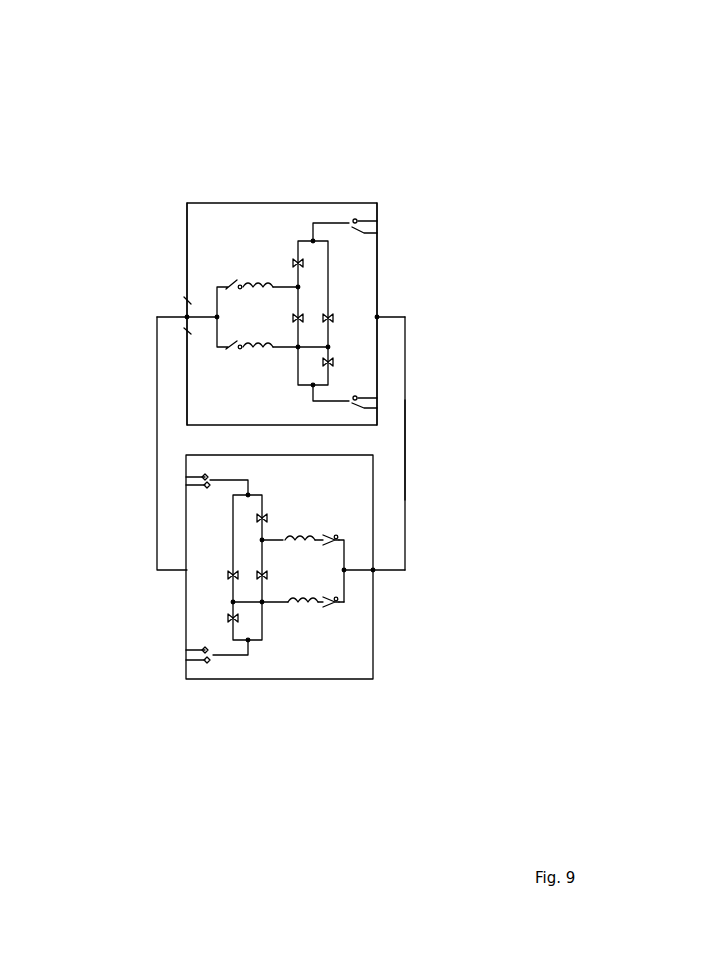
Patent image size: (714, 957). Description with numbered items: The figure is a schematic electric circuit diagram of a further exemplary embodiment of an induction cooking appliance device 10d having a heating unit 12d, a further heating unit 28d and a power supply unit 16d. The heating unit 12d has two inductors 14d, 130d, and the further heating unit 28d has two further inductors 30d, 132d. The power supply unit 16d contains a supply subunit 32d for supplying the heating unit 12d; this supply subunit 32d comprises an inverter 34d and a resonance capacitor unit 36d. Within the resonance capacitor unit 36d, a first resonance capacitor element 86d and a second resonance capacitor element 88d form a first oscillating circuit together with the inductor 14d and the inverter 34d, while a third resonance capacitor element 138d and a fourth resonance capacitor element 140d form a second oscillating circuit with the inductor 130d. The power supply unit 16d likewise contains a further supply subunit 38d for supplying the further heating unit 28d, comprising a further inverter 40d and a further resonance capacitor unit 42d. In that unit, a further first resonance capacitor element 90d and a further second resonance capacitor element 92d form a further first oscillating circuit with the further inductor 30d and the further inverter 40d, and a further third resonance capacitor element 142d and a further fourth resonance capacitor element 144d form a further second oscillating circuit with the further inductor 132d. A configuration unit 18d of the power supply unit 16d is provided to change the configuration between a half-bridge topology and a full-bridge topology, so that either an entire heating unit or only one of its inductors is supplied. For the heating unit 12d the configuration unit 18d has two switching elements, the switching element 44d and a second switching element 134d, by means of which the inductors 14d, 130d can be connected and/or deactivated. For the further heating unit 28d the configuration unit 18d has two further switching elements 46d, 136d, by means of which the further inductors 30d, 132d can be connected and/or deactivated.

The induction cooking appliance device 10d is at (521, 222).
The heating unit 12d is at (207, 162).
The inductor 14d is at (270, 284).
The power supply unit 16d is at (490, 305).
The configuration unit 18d is at (421, 370).
The further heating unit 28d is at (354, 727).
The further inductor 30d is at (327, 600).
The supply subunit 32d is at (337, 24).
The inverter 34d is at (180, 331).
The resonance capacitor unit 36d is at (442, 166).
The further supply subunit 38d is at (257, 880).
The further inverter 40d is at (380, 556).
The further resonance capacitor unit 42d is at (121, 774).
The switching element 44d is at (228, 286).
The further switching element 46d is at (336, 538).
The first resonance capacitor element 86d is at (297, 262).
The second resonance capacitor element 88d is at (296, 317).
The further first resonance capacitor element 90d is at (263, 541).
The further second resonance capacitor element 92d is at (262, 580).
The inductor 130d is at (260, 348).
The further inductor 132d is at (297, 542).
The supply line 134d is at (218, 342).
The further switching element 136d is at (336, 595).
The third resonance capacitor element 138d is at (331, 316).
The fourth resonance capacitor element 140d is at (331, 360).
The further third resonance capacitor element 142d is at (233, 578).
The further fourth resonance capacitor element 144d is at (236, 624).